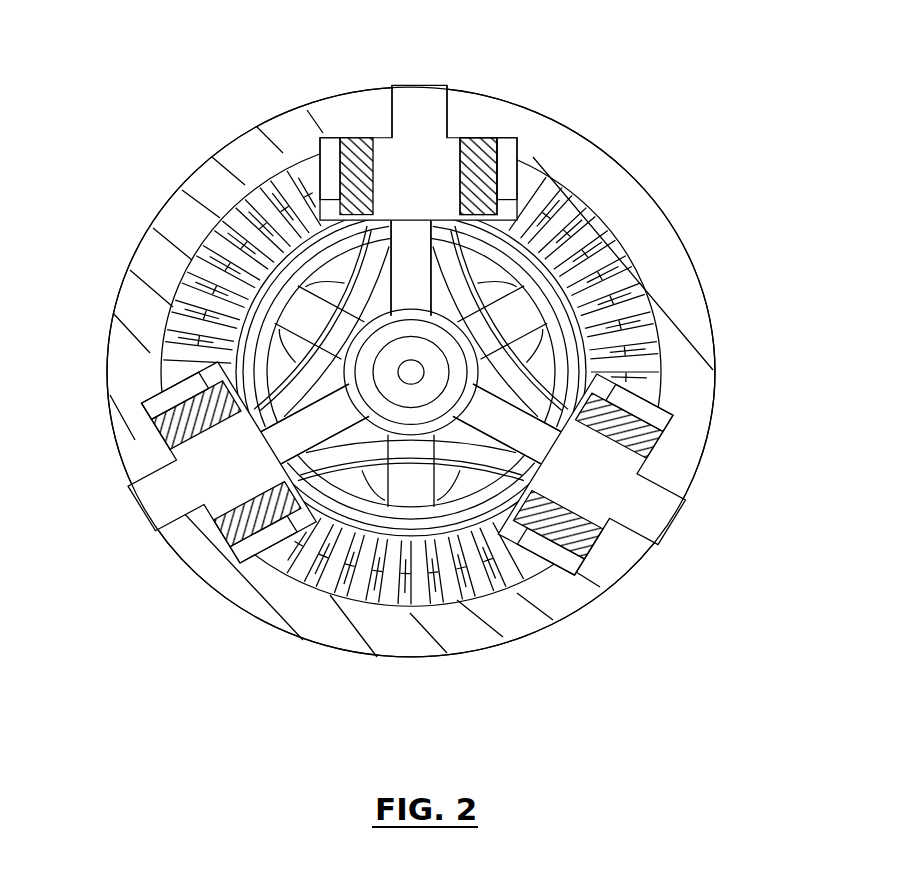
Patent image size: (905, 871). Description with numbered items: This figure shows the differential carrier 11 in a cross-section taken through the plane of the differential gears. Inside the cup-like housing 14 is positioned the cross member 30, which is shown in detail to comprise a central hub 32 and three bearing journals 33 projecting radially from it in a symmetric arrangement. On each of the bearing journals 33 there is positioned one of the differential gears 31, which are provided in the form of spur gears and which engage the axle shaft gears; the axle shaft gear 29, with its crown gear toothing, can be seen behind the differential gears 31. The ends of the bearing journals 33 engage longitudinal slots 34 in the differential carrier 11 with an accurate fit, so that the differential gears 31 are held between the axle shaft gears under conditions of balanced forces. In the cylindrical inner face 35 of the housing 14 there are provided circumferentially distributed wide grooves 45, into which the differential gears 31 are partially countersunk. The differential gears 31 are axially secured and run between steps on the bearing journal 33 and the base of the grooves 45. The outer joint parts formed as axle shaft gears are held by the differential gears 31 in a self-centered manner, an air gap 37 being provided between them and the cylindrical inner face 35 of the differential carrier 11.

The differential carrier 11 is at (632, 160).
The cup-shaped housing 14 is at (218, 185).
The axle shaft gear 29 is at (447, 607).
The cross member 30 is at (283, 362).
The differential gear 31 is at (594, 548).
The hub 32 is at (457, 372).
The bearing journal 33 is at (400, 115).
The longitudinal slot 34 is at (433, 115).
The inner face 35 is at (368, 606).
The air gap 37 is at (410, 603).
The wide groove 45 is at (482, 148).